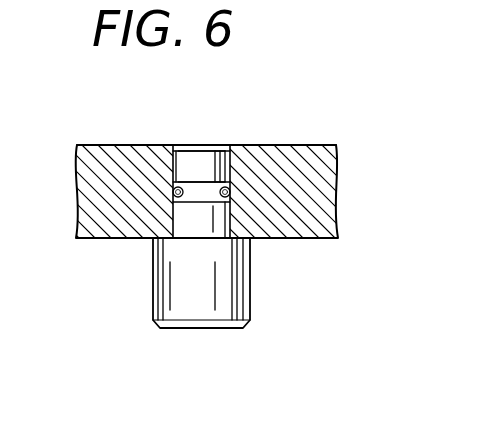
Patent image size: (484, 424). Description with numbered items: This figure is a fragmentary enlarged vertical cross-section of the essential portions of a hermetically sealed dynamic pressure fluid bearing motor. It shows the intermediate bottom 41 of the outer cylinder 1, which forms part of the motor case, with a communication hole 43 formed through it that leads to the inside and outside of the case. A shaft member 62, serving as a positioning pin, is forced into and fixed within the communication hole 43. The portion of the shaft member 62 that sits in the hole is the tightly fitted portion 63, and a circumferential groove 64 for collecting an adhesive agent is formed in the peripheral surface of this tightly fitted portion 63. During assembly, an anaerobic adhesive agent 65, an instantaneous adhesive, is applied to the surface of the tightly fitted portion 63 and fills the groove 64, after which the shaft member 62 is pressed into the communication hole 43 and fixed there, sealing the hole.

The outer cylinder 1 is at (289, 141).
The intermediate bottom 41 is at (308, 240).
The communication hole 43 is at (174, 210).
The shaft member 62 is at (240, 308).
The tightly fitted portion 63 is at (231, 192).
The circumferential groove 64 is at (200, 183).
The anaerobic adhesive agent 65 is at (172, 192).